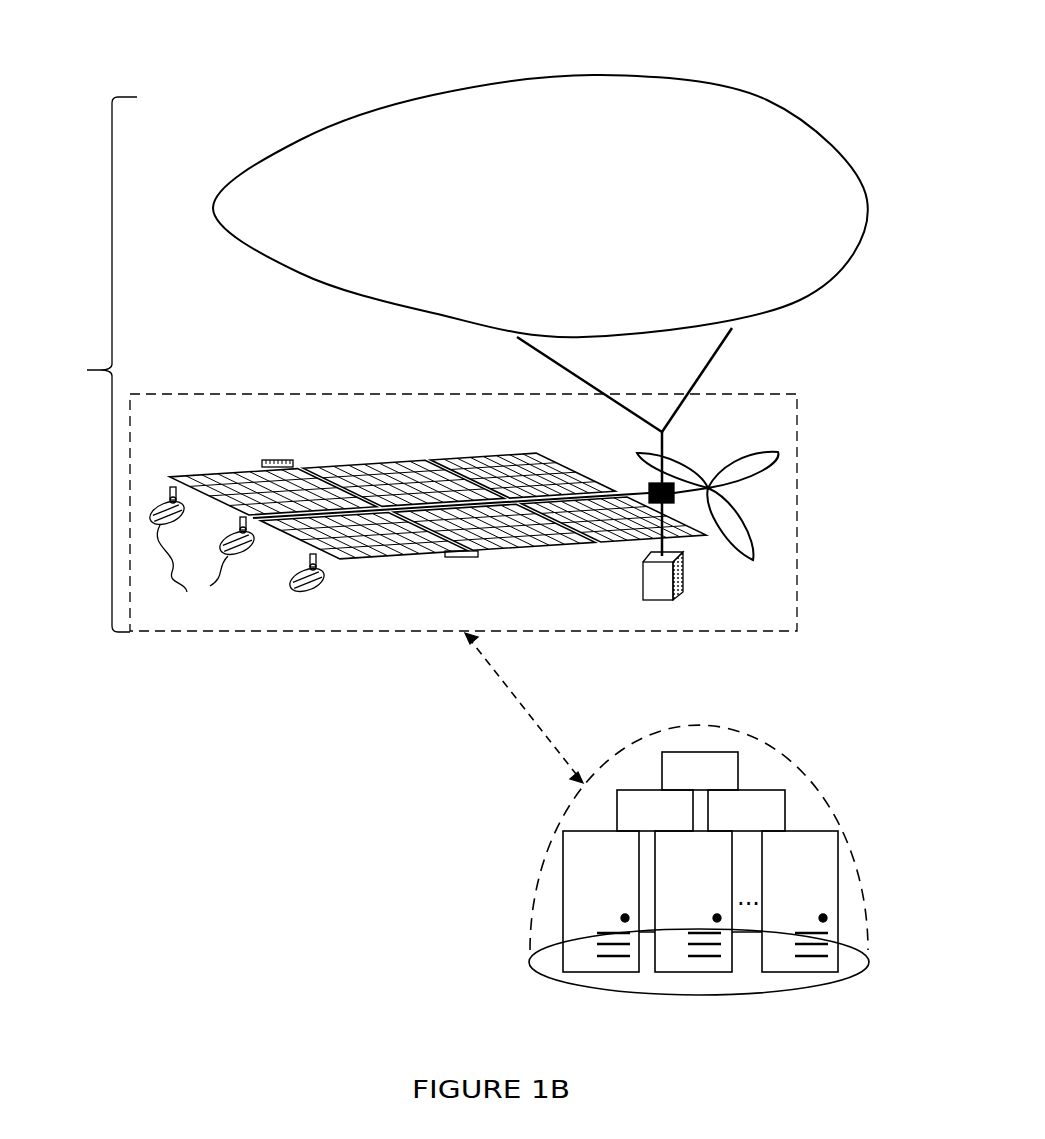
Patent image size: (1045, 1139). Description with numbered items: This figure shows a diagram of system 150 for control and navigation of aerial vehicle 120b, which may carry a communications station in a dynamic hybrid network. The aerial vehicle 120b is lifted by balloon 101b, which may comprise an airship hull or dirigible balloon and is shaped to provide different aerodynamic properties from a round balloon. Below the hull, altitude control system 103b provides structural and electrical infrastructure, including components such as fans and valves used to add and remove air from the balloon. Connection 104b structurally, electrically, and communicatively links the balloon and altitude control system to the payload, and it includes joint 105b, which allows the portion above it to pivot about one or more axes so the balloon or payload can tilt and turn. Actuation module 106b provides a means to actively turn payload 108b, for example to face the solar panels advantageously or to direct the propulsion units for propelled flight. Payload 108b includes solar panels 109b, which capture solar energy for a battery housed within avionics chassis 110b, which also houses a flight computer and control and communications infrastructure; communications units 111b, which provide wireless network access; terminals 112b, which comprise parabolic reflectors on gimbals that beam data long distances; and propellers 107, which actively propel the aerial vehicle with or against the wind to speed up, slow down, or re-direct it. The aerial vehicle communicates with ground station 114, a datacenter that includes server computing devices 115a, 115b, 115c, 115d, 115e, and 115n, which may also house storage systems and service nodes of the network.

The system 150 is at (187, 72).
The balloon 101b is at (800, 103).
The altitude control system 103b is at (585, 355).
The connection 104b is at (656, 440).
The joint 105b is at (670, 432).
The actuation module 106b is at (650, 490).
The propellers 107 is at (737, 556).
The payload 108b is at (204, 433).
The solar panels 109b is at (472, 458).
The avionics chassis 110b is at (641, 578).
The communications units 111b is at (458, 560).
The terminals 112b is at (292, 588).
The ground station 114 is at (848, 842).
The server computing device 115a is at (728, 783).
The server computing device 115b is at (685, 823).
The server computing device 115c is at (777, 823).
The server computing device 115d is at (630, 863).
The server computing device 115e is at (722, 863).
The server computing device 115n is at (832, 863).
The aerial vehicle 120b is at (83, 364).